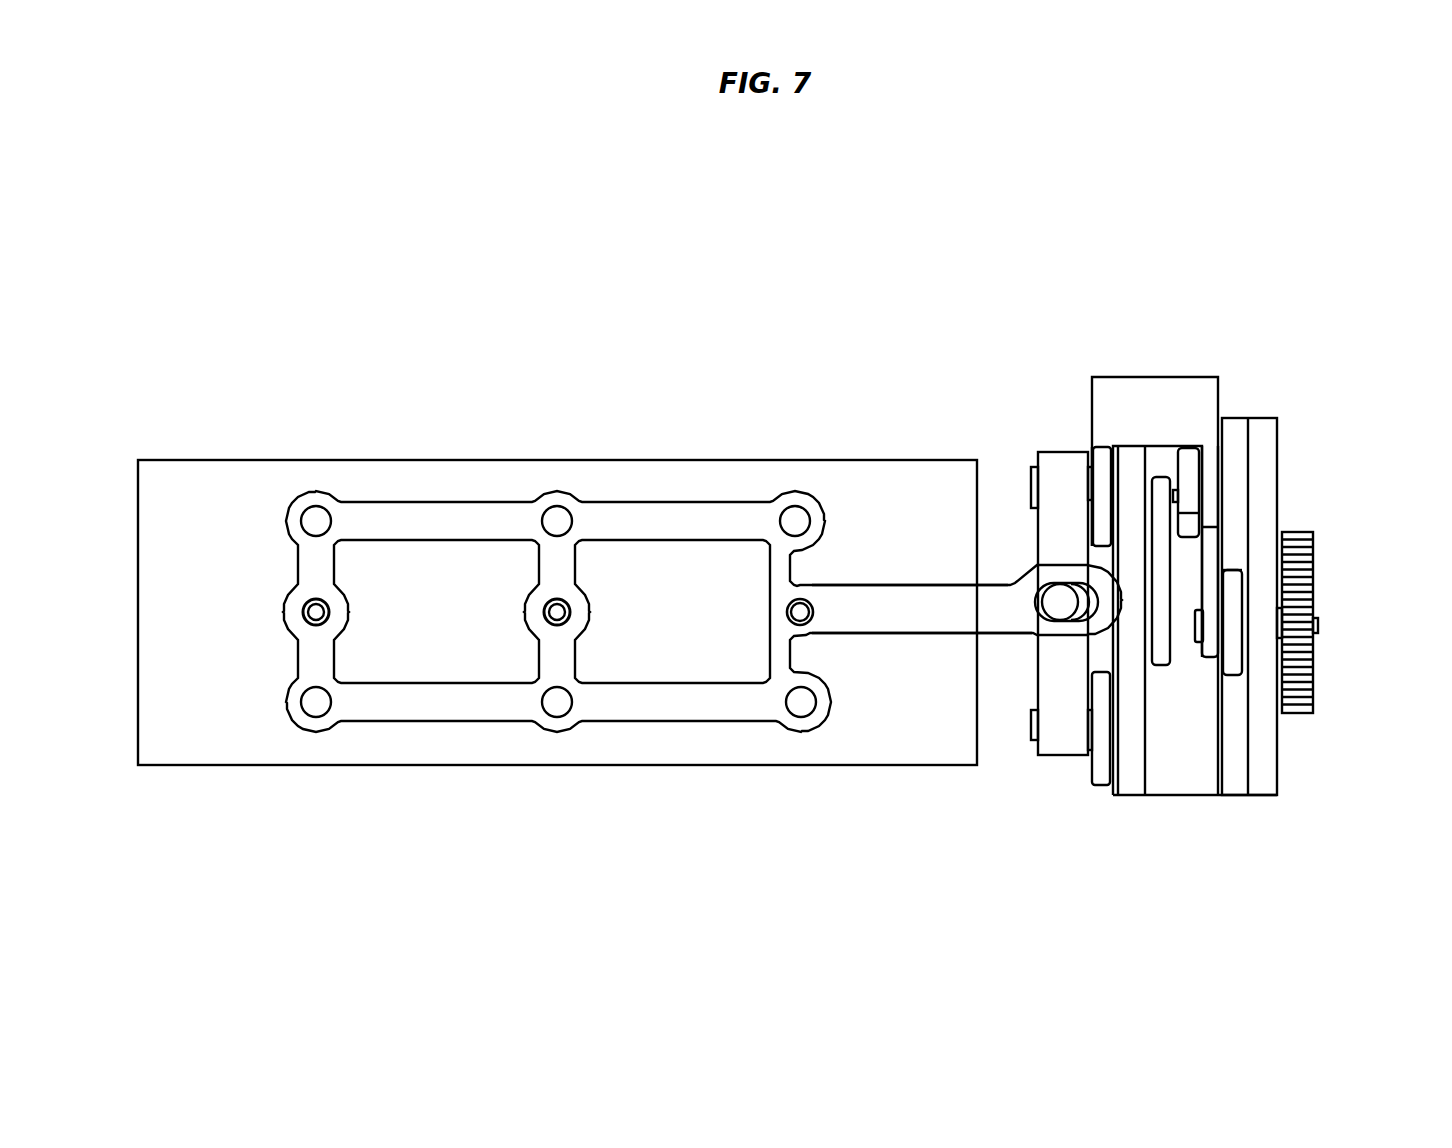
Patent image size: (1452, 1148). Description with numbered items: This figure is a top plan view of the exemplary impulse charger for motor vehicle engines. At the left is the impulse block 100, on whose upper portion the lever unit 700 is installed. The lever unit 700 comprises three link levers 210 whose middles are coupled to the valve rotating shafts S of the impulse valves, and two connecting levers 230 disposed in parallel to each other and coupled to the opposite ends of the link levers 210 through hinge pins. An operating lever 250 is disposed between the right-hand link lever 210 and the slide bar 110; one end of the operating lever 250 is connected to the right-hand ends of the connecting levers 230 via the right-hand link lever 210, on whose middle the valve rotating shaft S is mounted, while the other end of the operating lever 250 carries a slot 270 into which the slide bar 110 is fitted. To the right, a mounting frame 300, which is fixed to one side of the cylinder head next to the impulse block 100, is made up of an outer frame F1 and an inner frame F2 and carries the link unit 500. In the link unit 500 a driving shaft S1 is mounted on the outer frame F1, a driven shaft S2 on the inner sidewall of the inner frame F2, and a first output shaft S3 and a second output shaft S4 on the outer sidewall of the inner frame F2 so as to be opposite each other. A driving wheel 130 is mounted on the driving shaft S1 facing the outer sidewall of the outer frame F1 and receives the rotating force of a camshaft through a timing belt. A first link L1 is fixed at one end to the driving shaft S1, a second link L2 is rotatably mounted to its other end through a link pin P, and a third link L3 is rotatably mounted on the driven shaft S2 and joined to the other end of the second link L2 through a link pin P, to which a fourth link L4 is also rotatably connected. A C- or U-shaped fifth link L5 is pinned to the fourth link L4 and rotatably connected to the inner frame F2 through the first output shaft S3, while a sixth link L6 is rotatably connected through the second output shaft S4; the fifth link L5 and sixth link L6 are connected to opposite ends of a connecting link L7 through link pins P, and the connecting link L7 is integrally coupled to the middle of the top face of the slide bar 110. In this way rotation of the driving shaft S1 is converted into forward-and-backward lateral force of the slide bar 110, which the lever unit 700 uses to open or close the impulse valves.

The lever unit 700 is at (523, 360).
The impulse block 100 is at (590, 742).
The connecting levers 230 is at (687, 703).
The link levers 210 is at (560, 648).
The valve rotating shaft S is at (552, 603).
The operating lever 250 is at (905, 620).
The slot 270 is at (1088, 591).
The slide bar 110 is at (1058, 608).
The link pin P is at (1030, 478).
The link unit 500 is at (1151, 324).
The first output shaft S3 is at (1108, 470).
The second output shaft S4 is at (1087, 725).
The connecting link L7 is at (1082, 720).
The fifth link L5 is at (1165, 388).
The sixth link L6 is at (1100, 785).
The inner frame F2 is at (1125, 778).
The mounting frame 300 is at (1265, 802).
The third link L3 is at (1160, 667).
The fourth link L4 is at (1188, 447).
The driven shaft S2 is at (1177, 606).
The second link L2 is at (1205, 657).
The first link L1 is at (1231, 675).
The driving shaft S1 is at (1242, 572).
The outer frame F1 is at (1268, 768).
The driving wheel 130 is at (1308, 567).